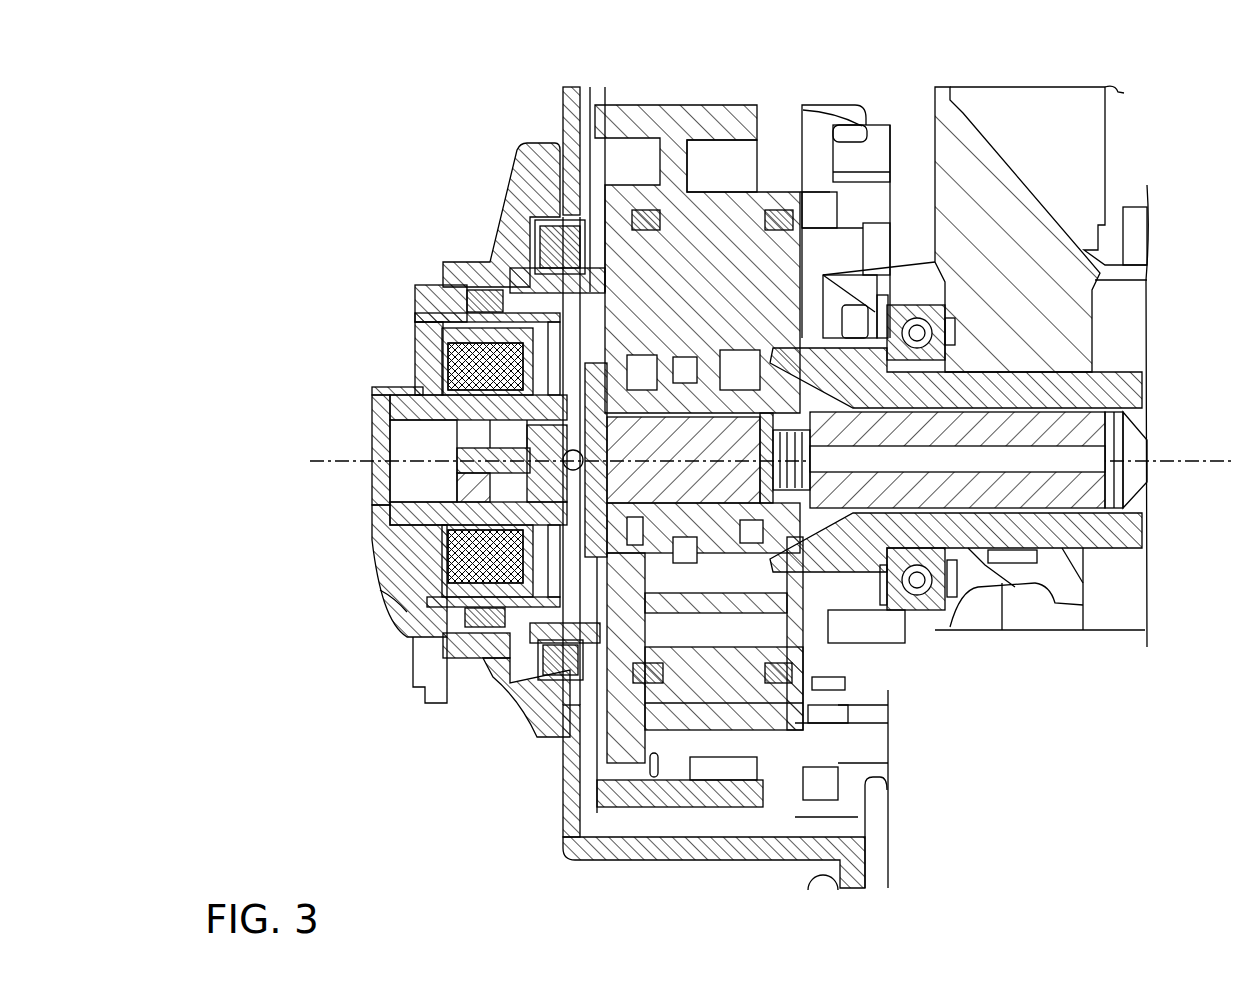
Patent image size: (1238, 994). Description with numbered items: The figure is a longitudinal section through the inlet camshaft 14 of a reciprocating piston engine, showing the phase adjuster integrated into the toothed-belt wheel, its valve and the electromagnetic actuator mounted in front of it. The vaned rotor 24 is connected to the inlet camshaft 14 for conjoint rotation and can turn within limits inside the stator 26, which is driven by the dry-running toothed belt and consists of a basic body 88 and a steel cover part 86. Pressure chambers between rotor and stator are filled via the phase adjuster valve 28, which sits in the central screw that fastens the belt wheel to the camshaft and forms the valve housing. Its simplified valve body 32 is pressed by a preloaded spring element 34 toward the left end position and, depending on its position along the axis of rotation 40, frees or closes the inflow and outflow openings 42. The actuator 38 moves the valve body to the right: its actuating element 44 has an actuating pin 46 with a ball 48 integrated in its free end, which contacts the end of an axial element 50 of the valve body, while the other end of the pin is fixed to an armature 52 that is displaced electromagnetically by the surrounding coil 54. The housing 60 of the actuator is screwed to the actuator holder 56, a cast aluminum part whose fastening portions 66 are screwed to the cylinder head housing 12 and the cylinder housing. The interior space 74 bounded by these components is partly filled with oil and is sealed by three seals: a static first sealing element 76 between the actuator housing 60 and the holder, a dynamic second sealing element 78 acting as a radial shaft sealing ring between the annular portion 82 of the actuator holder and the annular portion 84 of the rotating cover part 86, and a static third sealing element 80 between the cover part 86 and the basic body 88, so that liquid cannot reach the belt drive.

The cylinder head housing 12 is at (955, 128).
The inlet camshaft 14 is at (1123, 387).
The vaned rotor 24 is at (757, 573).
The stator 26 is at (705, 160).
The phase adjuster valve 28 is at (620, 482).
The valve body 32 is at (582, 570).
The spring element 34 is at (902, 598).
The actuator 38 is at (348, 467).
The axis of rotation 40 is at (1190, 461).
The inflow and outflow openings 42 is at (658, 368).
The actuating element 44 is at (560, 463).
The actuating pin 46 is at (372, 407).
The ball 48 is at (597, 465).
The axial element 50 is at (565, 470).
The armature 52 is at (407, 487).
The coil 54 is at (480, 362).
The actuator holder 56 is at (580, 832).
The housing 60 is at (375, 442).
The fastening portions 66 is at (800, 890).
The interior space 74 is at (563, 333).
The first sealing element 76 is at (467, 292).
The second sealing element 78 is at (553, 262).
The third sealing element 80 is at (650, 215).
The annular portion 82 is at (550, 200).
The annular portion 84 is at (533, 273).
The cover part 86 is at (613, 195).
The basic body 88 is at (717, 225).